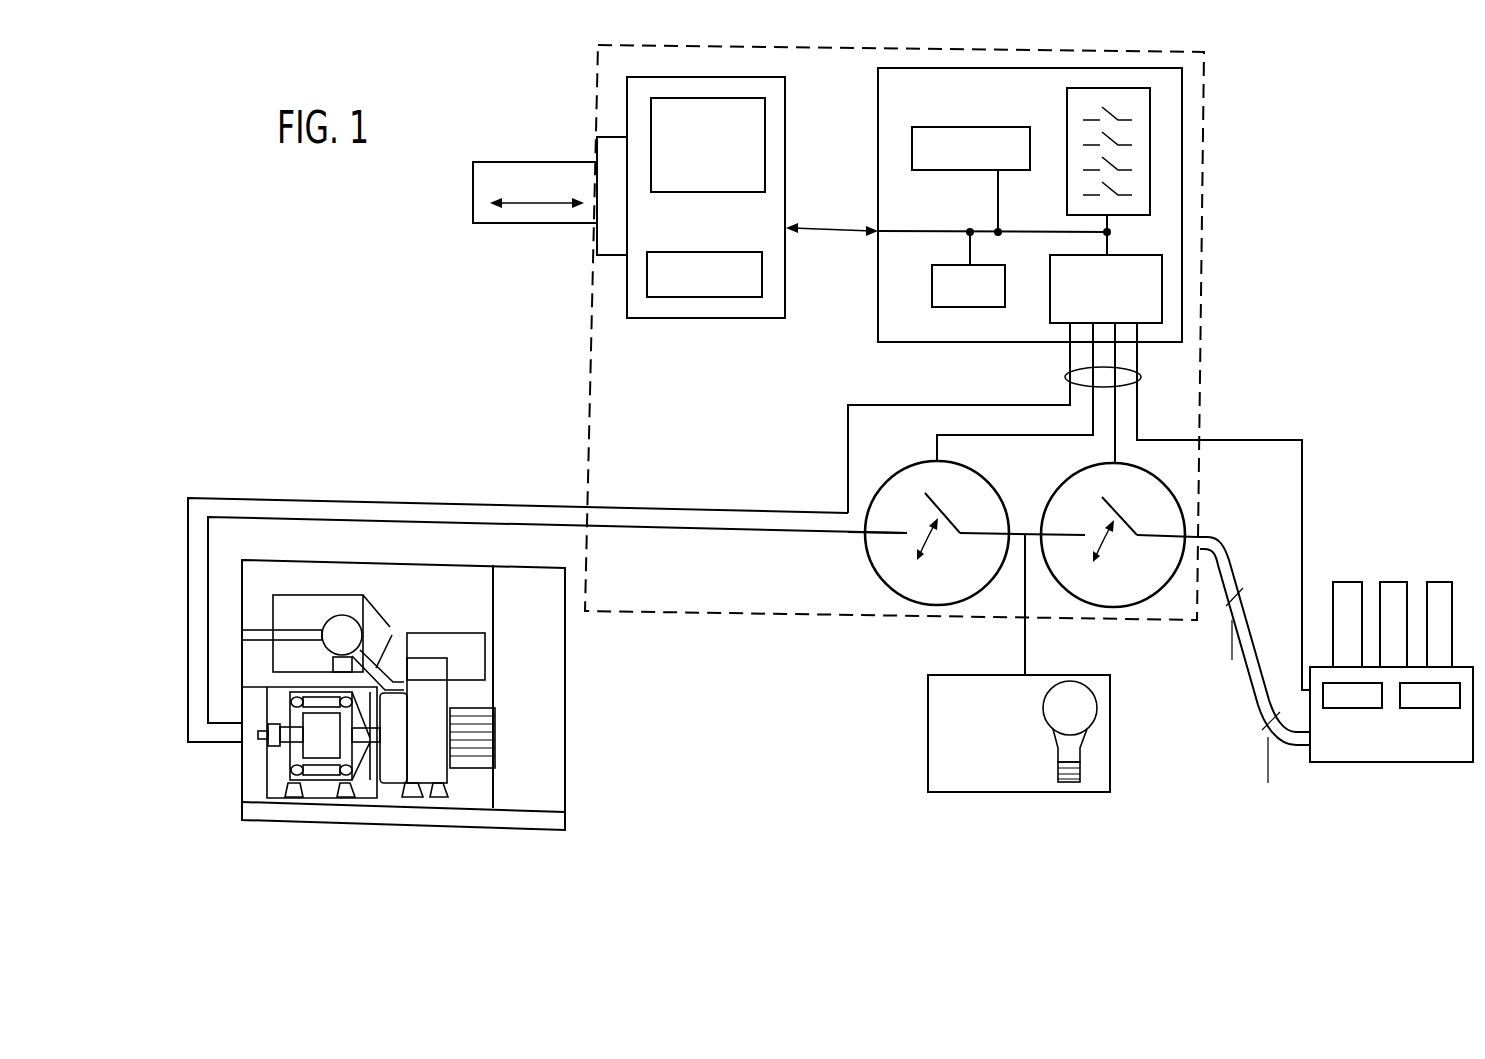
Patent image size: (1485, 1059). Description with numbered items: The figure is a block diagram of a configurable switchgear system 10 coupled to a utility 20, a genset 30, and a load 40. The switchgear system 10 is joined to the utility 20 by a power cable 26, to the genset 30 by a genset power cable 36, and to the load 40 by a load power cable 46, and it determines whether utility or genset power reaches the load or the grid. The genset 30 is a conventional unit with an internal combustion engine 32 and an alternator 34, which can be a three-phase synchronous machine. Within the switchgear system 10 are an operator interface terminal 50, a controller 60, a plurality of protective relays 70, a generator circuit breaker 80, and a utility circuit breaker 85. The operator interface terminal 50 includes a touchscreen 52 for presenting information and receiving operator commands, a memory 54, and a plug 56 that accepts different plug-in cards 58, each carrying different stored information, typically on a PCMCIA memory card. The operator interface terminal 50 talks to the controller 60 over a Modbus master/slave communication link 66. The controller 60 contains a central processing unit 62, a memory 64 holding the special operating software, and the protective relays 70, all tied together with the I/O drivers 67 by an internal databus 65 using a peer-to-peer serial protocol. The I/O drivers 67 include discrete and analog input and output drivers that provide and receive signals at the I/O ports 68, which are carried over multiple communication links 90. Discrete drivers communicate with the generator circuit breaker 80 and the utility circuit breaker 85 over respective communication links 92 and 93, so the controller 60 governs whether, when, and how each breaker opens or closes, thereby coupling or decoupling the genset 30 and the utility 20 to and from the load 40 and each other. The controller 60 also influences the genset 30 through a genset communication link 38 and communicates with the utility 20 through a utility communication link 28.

The switchgear system 10 is at (1205, 200).
The utility 20 is at (1392, 763).
The power cable 26 is at (1247, 678).
The utility communication link 28 is at (1303, 505).
The genset 30 is at (567, 628).
The internal combustion engine 32 is at (471, 792).
The alternator 34 is at (286, 808).
The genset power cable 36 is at (215, 567).
The genset communication link 38 is at (352, 498).
The load 40 is at (1112, 733).
The load power cable 46 is at (1027, 637).
The operator interface terminal 50 is at (786, 137).
The touchscreen 52 is at (677, 97).
The memory 54 is at (705, 298).
The plug 56 is at (613, 135).
The plug-in card 58 is at (473, 190).
The controller 60 is at (955, 68).
The central processing unit 62 is at (932, 285).
The memory 64 is at (970, 127).
The internal databus 65 is at (937, 232).
The communication link 66 is at (833, 226).
The I/O drivers 67 is at (1050, 288).
The I/O ports 68 is at (1152, 353).
The protective relays 70 is at (1067, 115).
The generator circuit breaker 80 is at (883, 482).
The utility circuit breaker 85 is at (1163, 482).
The communication links 90 is at (1063, 377).
The communication link 92 is at (1012, 437).
The communication link 93 is at (1117, 453).